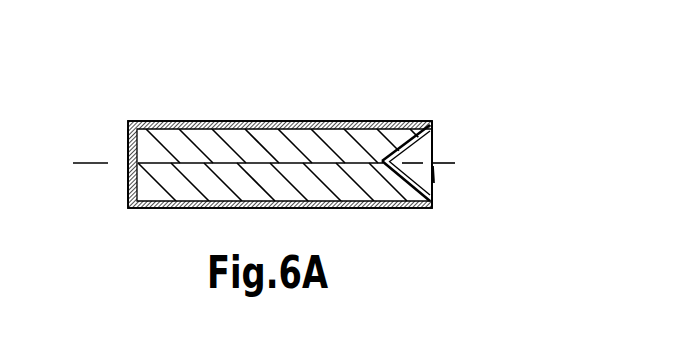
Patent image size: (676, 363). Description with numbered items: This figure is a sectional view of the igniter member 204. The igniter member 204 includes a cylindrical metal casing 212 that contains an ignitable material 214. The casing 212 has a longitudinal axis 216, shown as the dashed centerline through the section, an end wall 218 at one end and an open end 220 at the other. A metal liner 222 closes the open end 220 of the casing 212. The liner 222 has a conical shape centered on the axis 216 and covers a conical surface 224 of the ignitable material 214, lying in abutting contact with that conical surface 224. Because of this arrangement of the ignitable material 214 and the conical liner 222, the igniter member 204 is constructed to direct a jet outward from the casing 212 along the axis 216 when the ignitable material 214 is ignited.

The igniter member 204 is at (122, 154).
The cylindrical metal casing 212 is at (177, 125).
The ignitable material 214 is at (242, 152).
The longitudinal axis 216 is at (487, 195).
The end wall 218 is at (128, 188).
The open end 220 is at (433, 207).
The metal liner 222 is at (430, 140).
The conical surface 224 is at (410, 161).